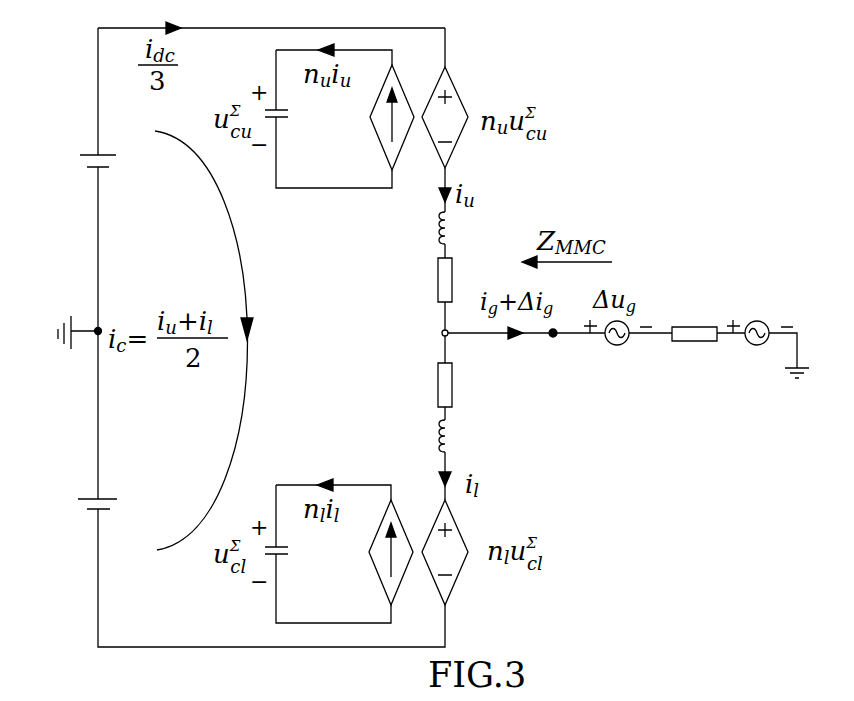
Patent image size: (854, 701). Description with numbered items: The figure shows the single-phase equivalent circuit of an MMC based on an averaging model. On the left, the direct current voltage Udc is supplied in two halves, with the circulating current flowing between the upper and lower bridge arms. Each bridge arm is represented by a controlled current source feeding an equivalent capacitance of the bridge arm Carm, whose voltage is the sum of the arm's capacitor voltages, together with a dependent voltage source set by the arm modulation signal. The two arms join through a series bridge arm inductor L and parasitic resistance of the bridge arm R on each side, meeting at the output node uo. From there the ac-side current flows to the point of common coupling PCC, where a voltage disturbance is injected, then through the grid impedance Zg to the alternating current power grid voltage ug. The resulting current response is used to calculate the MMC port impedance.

The direct current voltage Udc is at (77, 159).
The equivalent capacitance of a bridge arm Carm is at (309, 336).
The bridge arm inductor L is at (427, 335).
The parasitic resistance of an MMC bridge arm R is at (429, 332).
The output node voltage uo is at (430, 335).
The point of common coupling PCC is at (556, 354).
The grid impedance Zg is at (694, 315).
The alternating current power grid voltage ug is at (758, 316).